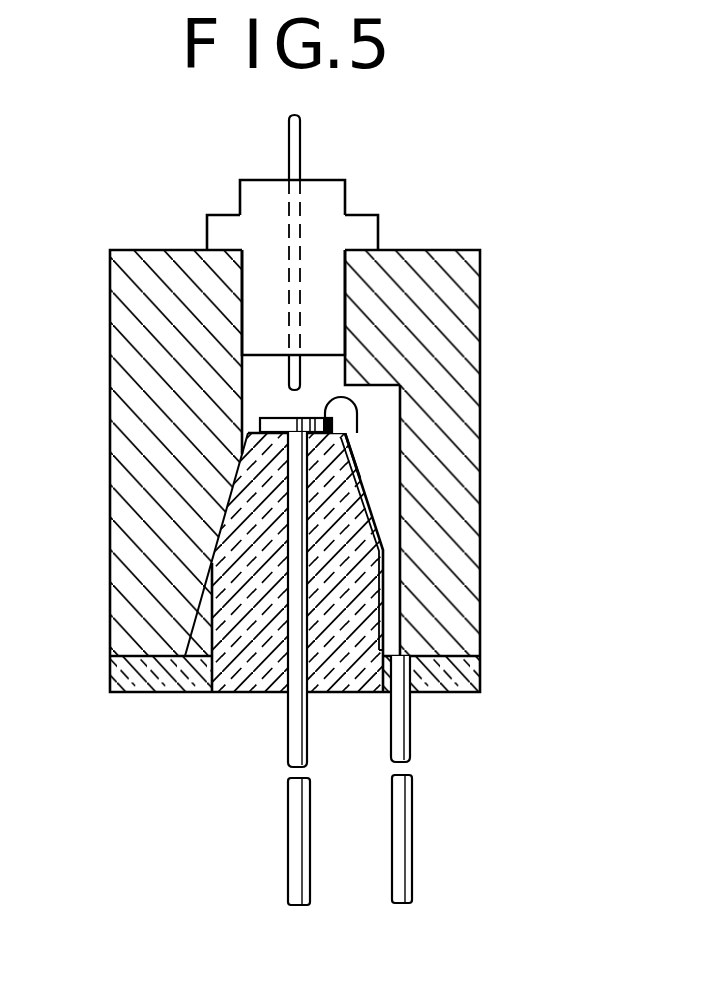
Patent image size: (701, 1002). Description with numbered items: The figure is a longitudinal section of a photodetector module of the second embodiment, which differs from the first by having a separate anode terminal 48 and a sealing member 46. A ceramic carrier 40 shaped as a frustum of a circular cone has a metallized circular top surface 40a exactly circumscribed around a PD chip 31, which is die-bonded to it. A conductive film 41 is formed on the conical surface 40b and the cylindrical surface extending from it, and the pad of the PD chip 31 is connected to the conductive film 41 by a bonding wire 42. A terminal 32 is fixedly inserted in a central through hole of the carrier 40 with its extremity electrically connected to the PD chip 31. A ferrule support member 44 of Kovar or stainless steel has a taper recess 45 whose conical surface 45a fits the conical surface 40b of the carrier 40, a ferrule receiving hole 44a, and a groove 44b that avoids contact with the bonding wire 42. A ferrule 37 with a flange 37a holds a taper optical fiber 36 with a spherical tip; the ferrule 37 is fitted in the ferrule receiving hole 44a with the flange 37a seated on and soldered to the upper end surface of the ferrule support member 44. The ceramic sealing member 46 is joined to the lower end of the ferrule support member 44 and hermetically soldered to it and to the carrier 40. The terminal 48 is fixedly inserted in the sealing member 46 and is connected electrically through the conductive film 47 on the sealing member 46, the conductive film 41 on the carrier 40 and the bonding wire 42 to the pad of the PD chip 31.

The PD chip 31 is at (275, 409).
The terminal 32 is at (288, 814).
The taper optical fiber 36 is at (288, 378).
The ferrule 37 is at (313, 197).
The flange 37a is at (360, 223).
The ceramic carrier 40 is at (350, 580).
The circular top surface 40a is at (250, 426).
The conical surface 40b is at (358, 432).
The conductive film 41 is at (378, 527).
The bonding wire 42 is at (350, 403).
The ferrule support member 44 is at (470, 508).
The ferrule receiving hole 44a is at (245, 366).
The groove 44b is at (392, 474).
The taper recess 45 is at (205, 637).
The conical surface 45a is at (202, 612).
The sealing member 46 is at (452, 690).
The conductive film 47 is at (397, 645).
The terminal 48 is at (412, 834).